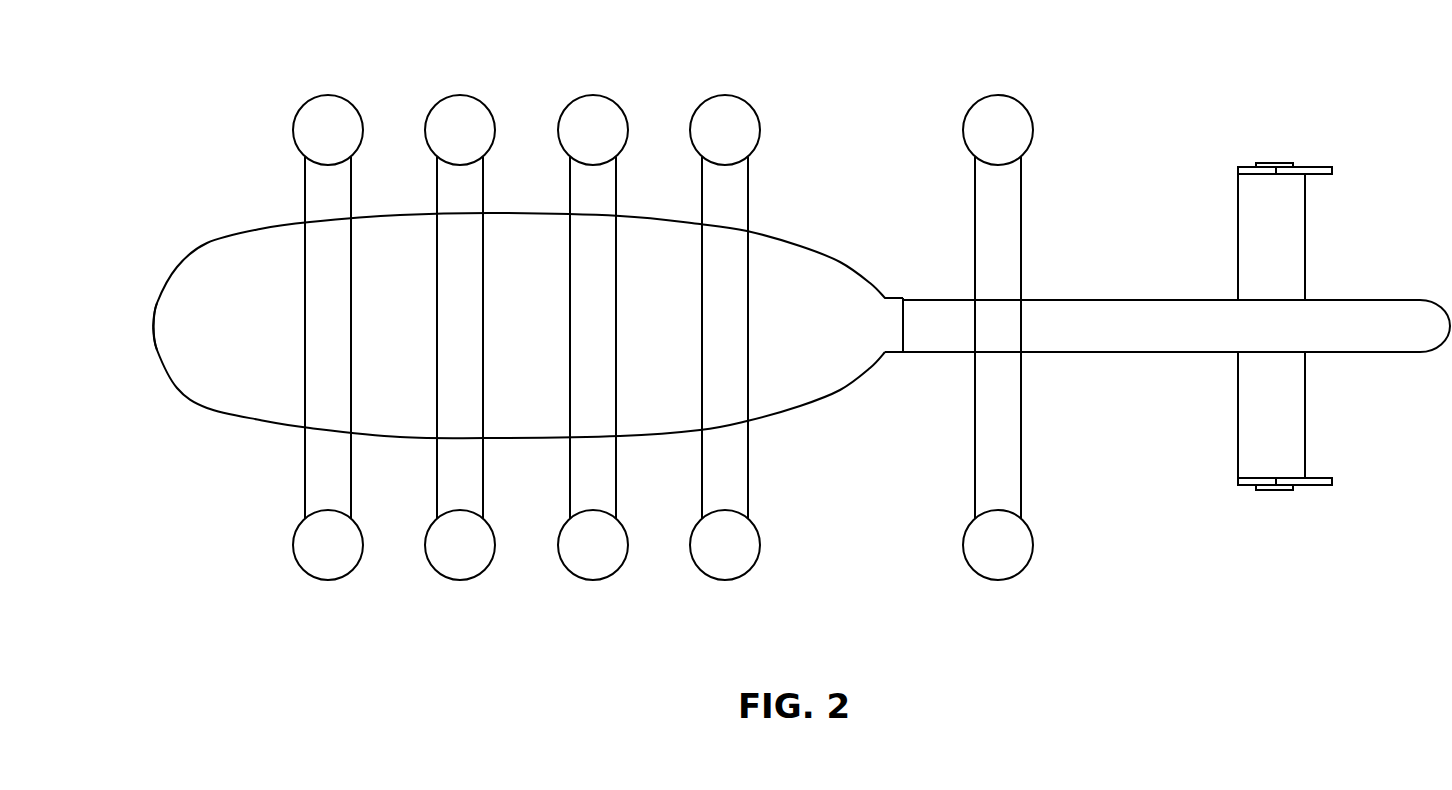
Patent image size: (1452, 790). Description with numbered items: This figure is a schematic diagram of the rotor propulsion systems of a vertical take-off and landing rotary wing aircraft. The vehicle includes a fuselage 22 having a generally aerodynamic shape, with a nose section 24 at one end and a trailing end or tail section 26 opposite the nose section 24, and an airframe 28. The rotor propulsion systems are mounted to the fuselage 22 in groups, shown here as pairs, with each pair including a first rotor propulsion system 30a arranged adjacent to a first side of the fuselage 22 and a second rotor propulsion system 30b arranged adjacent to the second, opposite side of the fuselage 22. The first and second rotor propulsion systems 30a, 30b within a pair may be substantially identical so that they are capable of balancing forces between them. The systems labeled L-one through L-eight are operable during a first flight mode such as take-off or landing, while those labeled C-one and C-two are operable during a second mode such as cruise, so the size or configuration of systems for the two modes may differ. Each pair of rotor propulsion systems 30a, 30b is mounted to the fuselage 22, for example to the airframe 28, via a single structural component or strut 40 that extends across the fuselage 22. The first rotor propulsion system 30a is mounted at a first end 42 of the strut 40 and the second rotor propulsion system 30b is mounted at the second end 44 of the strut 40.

The fuselage 22 is at (207, 248).
The nose section 24 is at (153, 340).
The tail section 26 is at (1130, 314).
The airframe 28 is at (511, 339).
The first rotor propulsion system 30a is at (331, 95).
The second rotor propulsion system 30b is at (325, 580).
The strut 40 is at (312, 354).
The first end of the strut 42 is at (310, 182).
The second end of the strut 44 is at (310, 500).